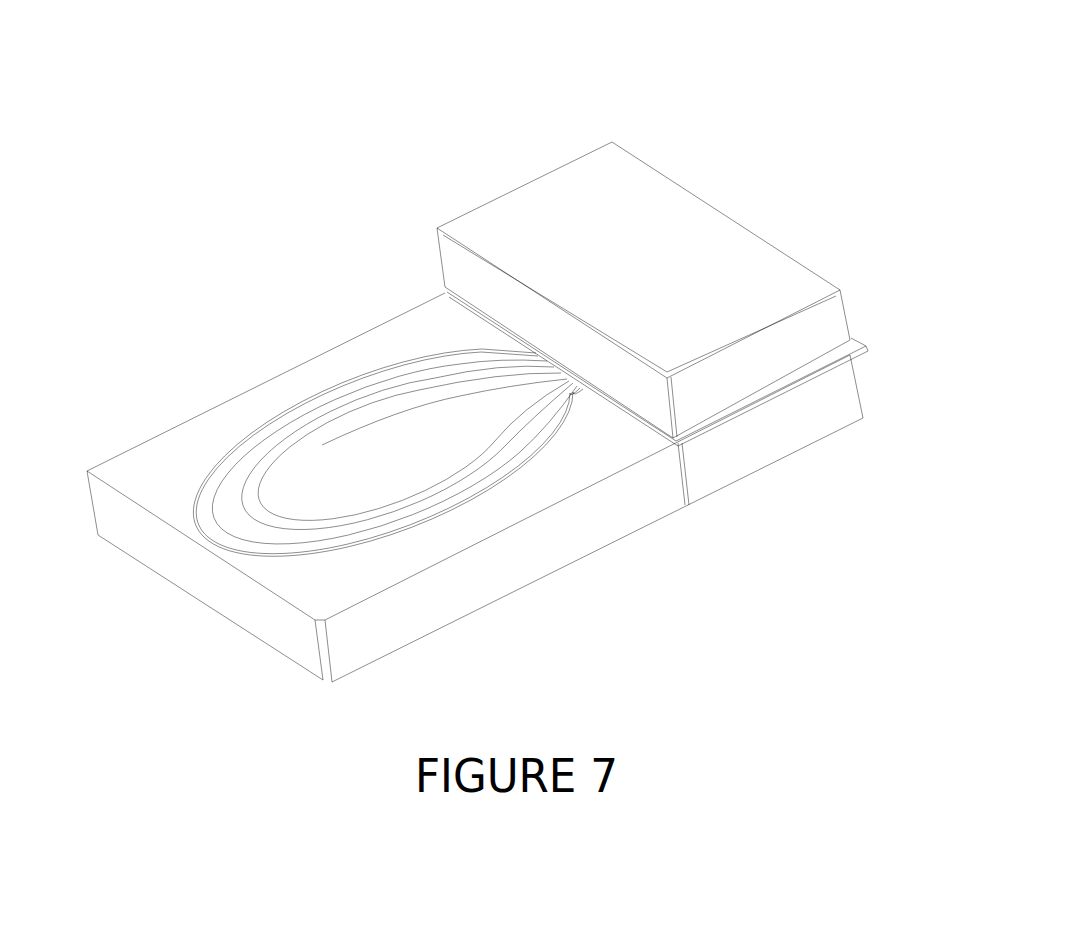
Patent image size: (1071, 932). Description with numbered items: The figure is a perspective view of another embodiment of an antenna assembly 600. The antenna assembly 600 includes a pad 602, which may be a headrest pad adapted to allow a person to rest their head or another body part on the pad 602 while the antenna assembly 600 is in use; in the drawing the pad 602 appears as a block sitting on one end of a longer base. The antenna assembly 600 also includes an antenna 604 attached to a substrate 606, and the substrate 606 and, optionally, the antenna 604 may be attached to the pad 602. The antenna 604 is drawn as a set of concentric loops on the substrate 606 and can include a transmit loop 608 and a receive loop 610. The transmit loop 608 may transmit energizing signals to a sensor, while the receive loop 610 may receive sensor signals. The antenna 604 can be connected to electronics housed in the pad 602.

The antenna assembly 600 is at (214, 102).
The pad 602 is at (660, 172).
The antenna 604 is at (328, 398).
The substrate 606 is at (270, 643).
The transmit loop 608 is at (212, 493).
The receive loop 610 is at (390, 408).